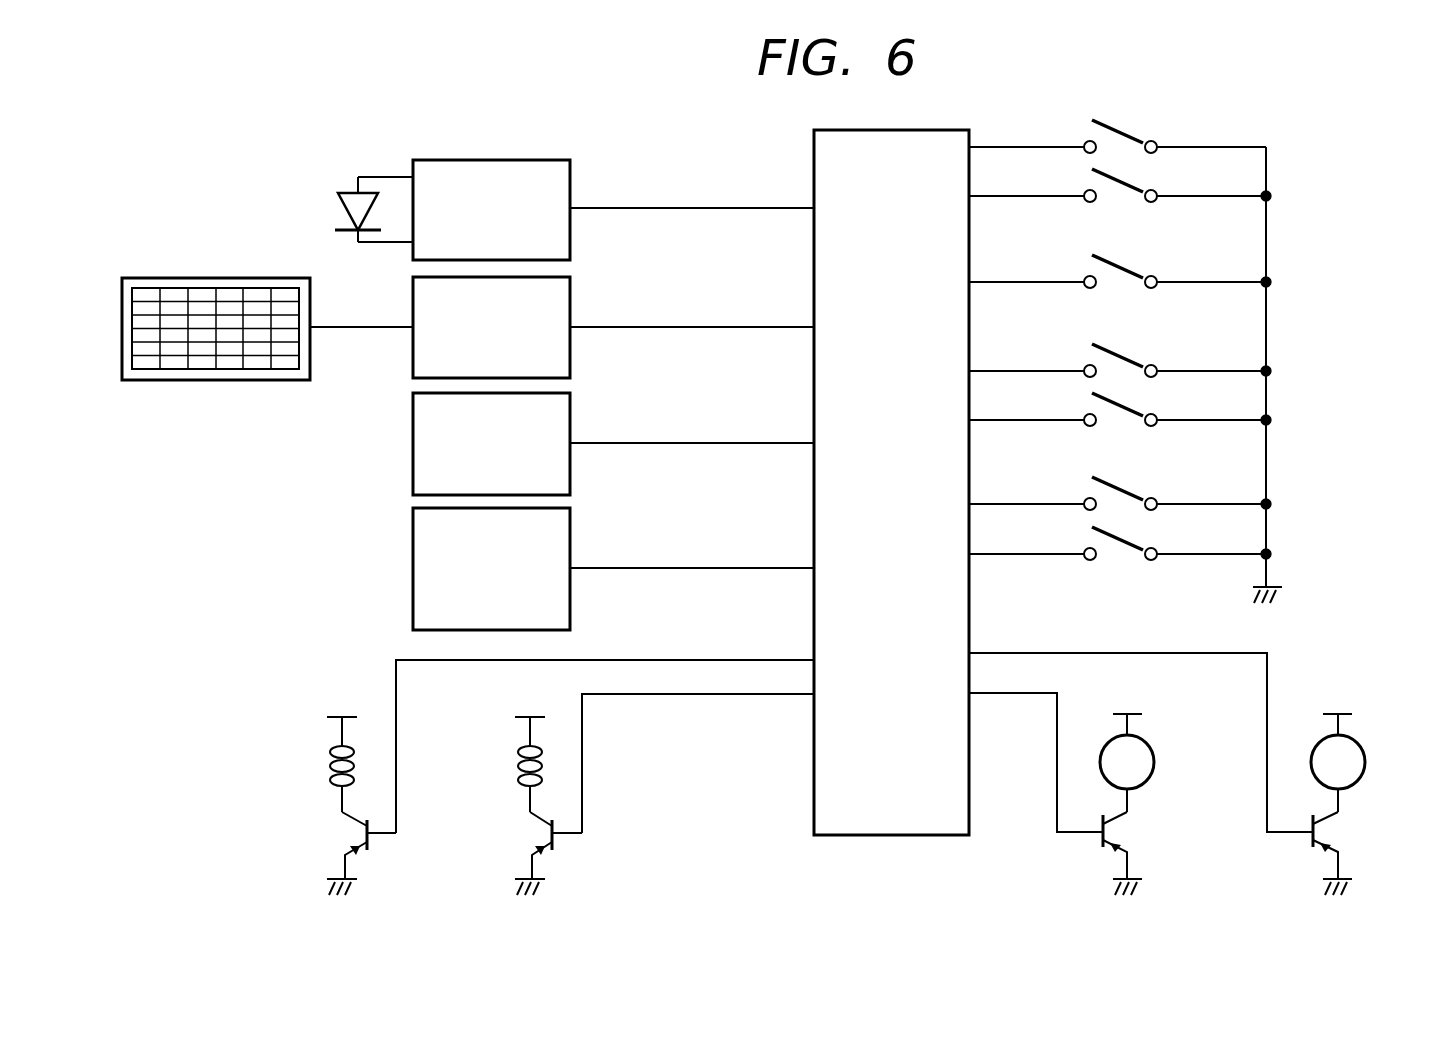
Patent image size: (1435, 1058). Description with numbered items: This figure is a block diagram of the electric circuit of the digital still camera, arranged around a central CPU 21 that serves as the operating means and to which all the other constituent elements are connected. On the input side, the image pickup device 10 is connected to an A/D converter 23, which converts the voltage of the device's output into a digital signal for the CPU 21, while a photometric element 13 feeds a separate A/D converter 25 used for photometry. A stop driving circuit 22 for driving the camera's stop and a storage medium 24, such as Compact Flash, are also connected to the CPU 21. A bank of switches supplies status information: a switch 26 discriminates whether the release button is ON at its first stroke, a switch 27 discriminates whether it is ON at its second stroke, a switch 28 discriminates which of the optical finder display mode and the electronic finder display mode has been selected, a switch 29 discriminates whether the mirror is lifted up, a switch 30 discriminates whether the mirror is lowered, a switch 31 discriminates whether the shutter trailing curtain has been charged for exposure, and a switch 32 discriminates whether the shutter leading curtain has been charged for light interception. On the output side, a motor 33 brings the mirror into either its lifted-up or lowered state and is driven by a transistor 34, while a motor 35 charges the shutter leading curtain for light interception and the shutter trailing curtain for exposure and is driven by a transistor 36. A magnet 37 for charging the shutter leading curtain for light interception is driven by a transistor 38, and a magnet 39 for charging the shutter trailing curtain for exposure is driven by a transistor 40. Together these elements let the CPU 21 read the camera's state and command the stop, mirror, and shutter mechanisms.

The image pickup device 10 is at (176, 278).
The photometric element 13 is at (346, 193).
The CPU 21 is at (940, 129).
The stop driving circuit 22 is at (572, 406).
The A/D converter 23 is at (572, 282).
The storage medium 24 is at (572, 521).
The A/D converter 25 is at (572, 165).
The switch 26 is at (1137, 132).
The switch 27 is at (1137, 181).
The switch 28 is at (1137, 266).
The switch 29 is at (1137, 355).
The switch 30 is at (1137, 404).
The switch 31 is at (1137, 489).
The switch 32 is at (1137, 539).
The motor 33 is at (1363, 748).
The transistor 34 is at (1328, 833).
The motor 35 is at (1152, 748).
The transistor 36 is at (1118, 833).
The magnet 37 is at (516, 762).
The transistor 38 is at (538, 833).
The magnet 39 is at (327, 762).
The transistor 40 is at (352, 833).